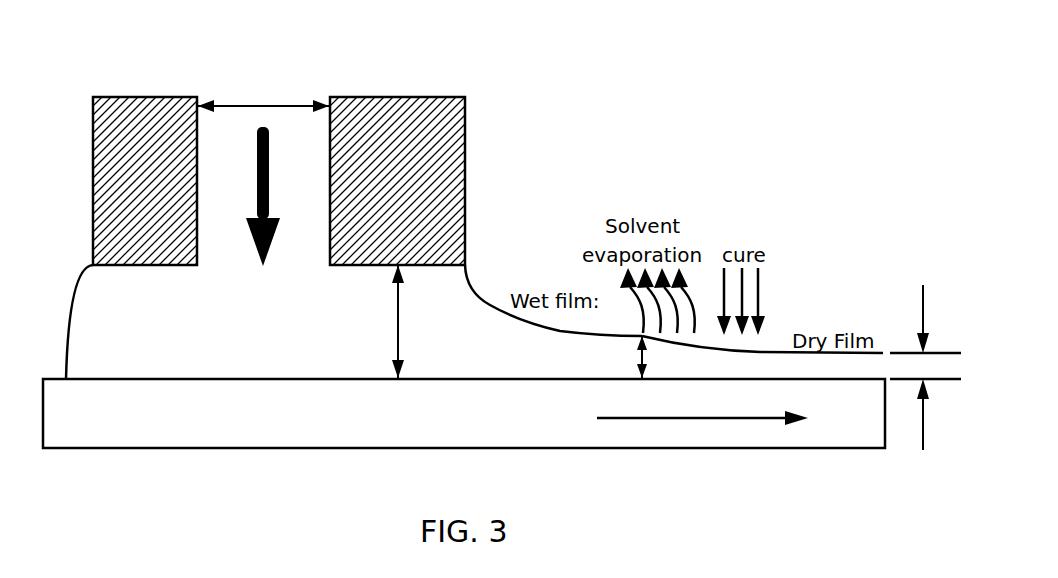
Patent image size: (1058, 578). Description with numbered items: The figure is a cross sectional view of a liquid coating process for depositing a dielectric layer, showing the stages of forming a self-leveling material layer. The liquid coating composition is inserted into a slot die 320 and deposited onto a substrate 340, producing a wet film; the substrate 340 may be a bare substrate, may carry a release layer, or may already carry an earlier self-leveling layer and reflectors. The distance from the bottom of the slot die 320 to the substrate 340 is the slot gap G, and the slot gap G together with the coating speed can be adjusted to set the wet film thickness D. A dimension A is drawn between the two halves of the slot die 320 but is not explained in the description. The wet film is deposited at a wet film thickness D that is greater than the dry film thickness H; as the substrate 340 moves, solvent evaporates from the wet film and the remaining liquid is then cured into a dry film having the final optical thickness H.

The slot die 320 is at (397, 97).
The substrate 340 is at (95, 447).
The slot gap width A is at (263, 95).
The slot gap G is at (407, 321).
The wet film thickness D is at (634, 357).
The dry film thickness H is at (925, 367).